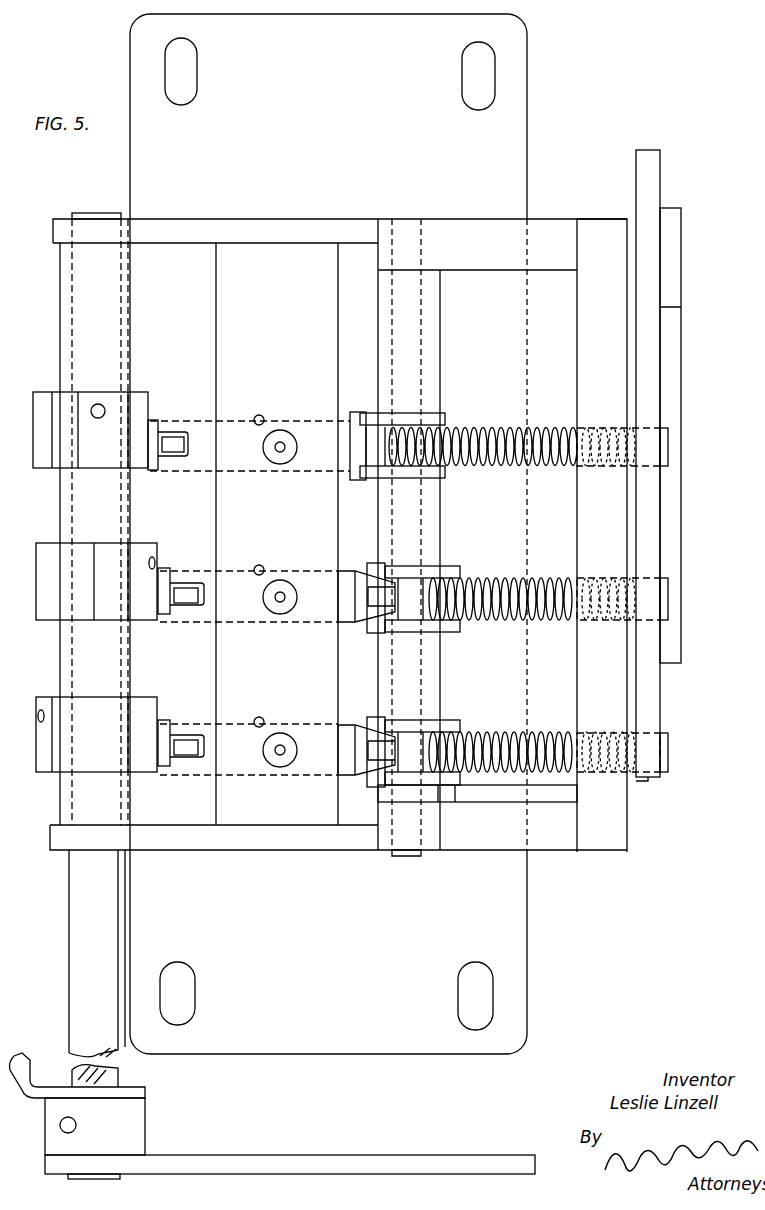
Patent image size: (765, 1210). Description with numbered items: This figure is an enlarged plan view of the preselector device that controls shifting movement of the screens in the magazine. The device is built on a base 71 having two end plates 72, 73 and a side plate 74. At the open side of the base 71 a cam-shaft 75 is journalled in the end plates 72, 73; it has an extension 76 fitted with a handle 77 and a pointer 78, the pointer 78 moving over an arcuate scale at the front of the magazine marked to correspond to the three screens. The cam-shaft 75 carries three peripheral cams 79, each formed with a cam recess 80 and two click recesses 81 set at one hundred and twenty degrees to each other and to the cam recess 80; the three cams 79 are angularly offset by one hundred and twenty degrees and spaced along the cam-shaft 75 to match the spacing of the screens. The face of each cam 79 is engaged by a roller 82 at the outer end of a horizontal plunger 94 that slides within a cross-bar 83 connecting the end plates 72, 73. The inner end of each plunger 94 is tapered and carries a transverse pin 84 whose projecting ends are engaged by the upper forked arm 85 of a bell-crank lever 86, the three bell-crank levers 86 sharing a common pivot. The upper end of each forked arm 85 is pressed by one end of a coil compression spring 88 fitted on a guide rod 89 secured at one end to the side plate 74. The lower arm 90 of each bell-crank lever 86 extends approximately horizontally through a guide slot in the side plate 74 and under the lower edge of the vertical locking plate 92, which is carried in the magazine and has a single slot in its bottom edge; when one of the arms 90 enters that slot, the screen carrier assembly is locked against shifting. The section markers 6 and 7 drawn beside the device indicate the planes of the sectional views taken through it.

The section line 6- 6 is at (50, 443).
The section line 7- 7 is at (50, 597).
The base 71 is at (340, 1045).
The end plate 72 is at (207, 228).
The end plate 73 is at (301, 840).
The side plate 74 is at (614, 232).
The cam-shaft 75 is at (108, 306).
The extension 76 is at (108, 886).
The handle 77 is at (276, 1161).
The pointer 78 is at (22, 1064).
The peripheral cam 79 is at (138, 405).
The cam recess 80 is at (62, 612).
The click recess 81 is at (64, 408).
The roller 82 is at (172, 434).
The cross-bar 83 is at (228, 332).
The transverse pin 84 is at (358, 414).
The upper forked arm 85 is at (450, 628).
The bell-crank lever 86 is at (453, 799).
The coil compression spring 88 is at (572, 434).
The guide rod 89 is at (470, 458).
The lower arm 90 is at (551, 470).
The vertical locking plate 92 is at (640, 408).
The horizontal plunger 94 is at (203, 472).